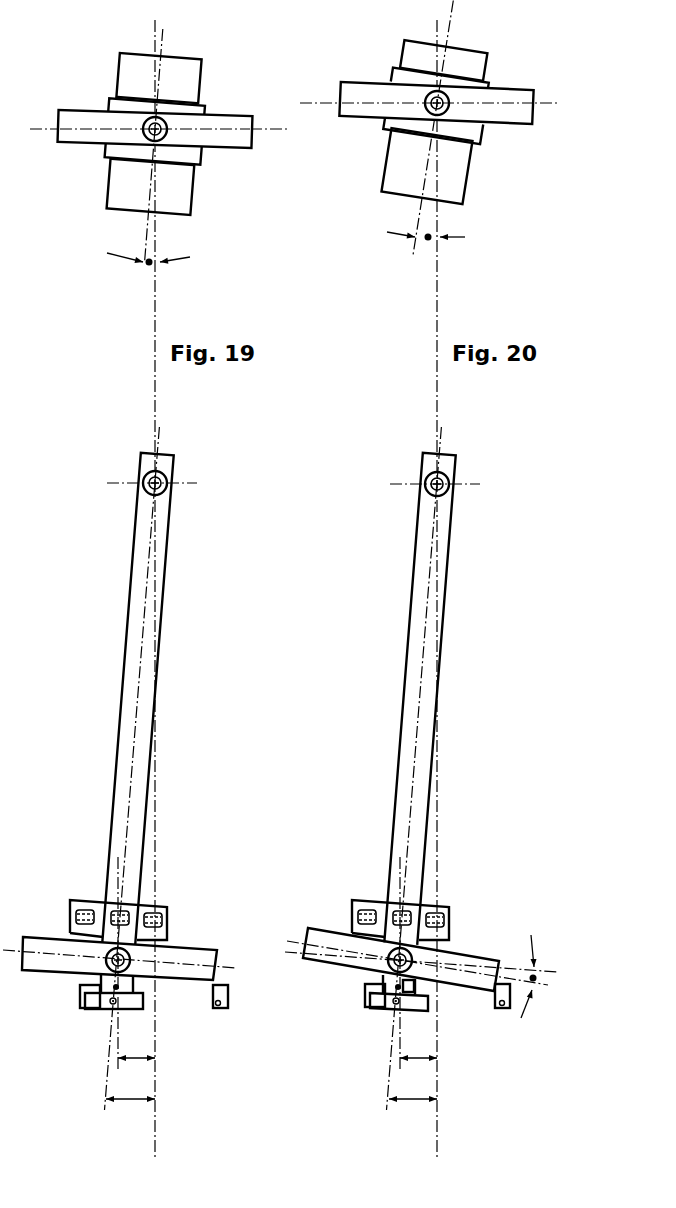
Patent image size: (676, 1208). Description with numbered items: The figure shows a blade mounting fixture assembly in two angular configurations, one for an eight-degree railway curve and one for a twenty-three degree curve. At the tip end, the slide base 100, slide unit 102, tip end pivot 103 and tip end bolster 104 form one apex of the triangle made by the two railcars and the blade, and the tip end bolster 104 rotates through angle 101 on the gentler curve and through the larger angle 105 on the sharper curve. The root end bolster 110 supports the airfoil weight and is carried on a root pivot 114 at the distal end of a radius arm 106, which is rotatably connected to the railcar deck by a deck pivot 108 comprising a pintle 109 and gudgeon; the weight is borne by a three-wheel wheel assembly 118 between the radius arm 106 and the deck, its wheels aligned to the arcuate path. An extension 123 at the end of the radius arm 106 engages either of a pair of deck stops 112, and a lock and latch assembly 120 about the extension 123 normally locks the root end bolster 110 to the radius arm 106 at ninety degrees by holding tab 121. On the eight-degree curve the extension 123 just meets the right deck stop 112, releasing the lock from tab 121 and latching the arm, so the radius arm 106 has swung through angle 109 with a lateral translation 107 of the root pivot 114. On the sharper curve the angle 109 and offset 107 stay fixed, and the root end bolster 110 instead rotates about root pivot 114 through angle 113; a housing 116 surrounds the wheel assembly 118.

In FIG. 19, the slide base 100 is at (202, 62).
In FIG. 20, the slide base 100 is at (472, 50).
In FIG. 19, the rotation angle of tip end bolster 101 is at (148, 266).
In FIG. 19, the slide unit 102 is at (205, 107).
In FIG. 20, the slide unit 102 is at (488, 78).
In FIG. 19, the tip end pivot 103 is at (145, 116).
In FIG. 20, the tip end pivot 103 is at (432, 93).
In FIG. 19, the tip end bolster 104 is at (237, 152).
In FIG. 20, the tip end bolster 104 is at (517, 123).
In FIG. 20, the rotation angle of tip end bolster on sharper curve 105 is at (428, 241).
In FIG. 19, the radius arm 106 is at (162, 603).
In FIG. 20, the radius arm 106 is at (444, 603).
In FIG. 19, the lateral translation 107 is at (137, 1060).
In FIG. 20, the lateral translation 107 is at (420, 1060).
In FIG. 19, the deck pivot 108 is at (163, 473).
In FIG. 20, the deck pivot 108 is at (445, 473).
In FIG. 19, the pintle 109 is at (158, 495).
In FIG. 20, the pintle 109 is at (441, 495).
In FIG. 19, the root end bolster 110 is at (50, 937).
In FIG. 20, the root end bolster 110 is at (330, 930).
In FIG. 19, the deck stop 112 is at (80, 995).
In FIG. 20, the deck stop 112 is at (365, 992).
In FIG. 20, the rotation angle of root end bolster 113 is at (538, 975).
In FIG. 19, the root pivot 114 is at (133, 959).
In FIG. 20, the root pivot 114 is at (413, 957).
In FIG. 19, the housing 116 is at (167, 908).
In FIG. 20, the housing 116 is at (450, 908).
In FIG. 19, the wheel assembly 118 is at (150, 913).
In FIG. 20, the wheel assembly 118 is at (432, 913).
In FIG. 19, the lock and latch assembly 120 is at (145, 1008).
In FIG. 20, the lock and latch assembly 120 is at (430, 1008).
In FIG. 19, the tab 121 is at (105, 1010).
In FIG. 20, the tab 121 is at (385, 1012).
In FIG. 20, the extension 123 is at (420, 987).